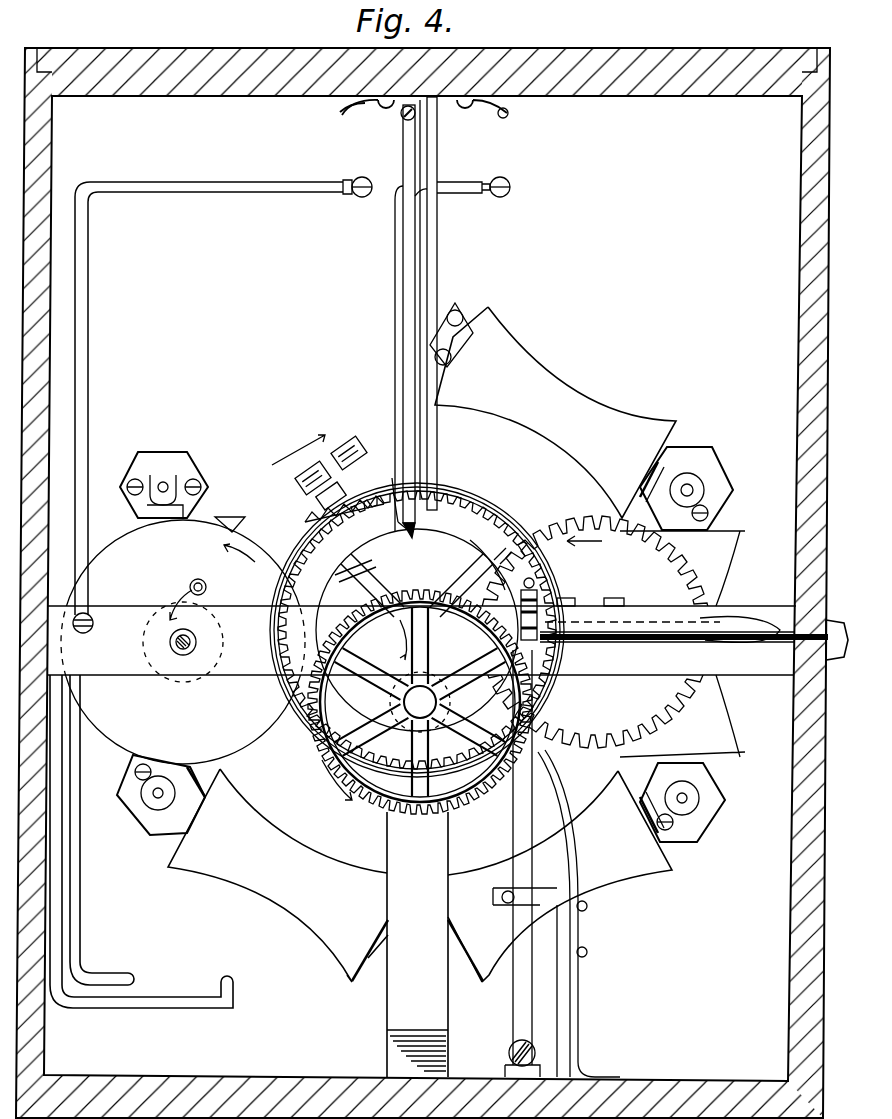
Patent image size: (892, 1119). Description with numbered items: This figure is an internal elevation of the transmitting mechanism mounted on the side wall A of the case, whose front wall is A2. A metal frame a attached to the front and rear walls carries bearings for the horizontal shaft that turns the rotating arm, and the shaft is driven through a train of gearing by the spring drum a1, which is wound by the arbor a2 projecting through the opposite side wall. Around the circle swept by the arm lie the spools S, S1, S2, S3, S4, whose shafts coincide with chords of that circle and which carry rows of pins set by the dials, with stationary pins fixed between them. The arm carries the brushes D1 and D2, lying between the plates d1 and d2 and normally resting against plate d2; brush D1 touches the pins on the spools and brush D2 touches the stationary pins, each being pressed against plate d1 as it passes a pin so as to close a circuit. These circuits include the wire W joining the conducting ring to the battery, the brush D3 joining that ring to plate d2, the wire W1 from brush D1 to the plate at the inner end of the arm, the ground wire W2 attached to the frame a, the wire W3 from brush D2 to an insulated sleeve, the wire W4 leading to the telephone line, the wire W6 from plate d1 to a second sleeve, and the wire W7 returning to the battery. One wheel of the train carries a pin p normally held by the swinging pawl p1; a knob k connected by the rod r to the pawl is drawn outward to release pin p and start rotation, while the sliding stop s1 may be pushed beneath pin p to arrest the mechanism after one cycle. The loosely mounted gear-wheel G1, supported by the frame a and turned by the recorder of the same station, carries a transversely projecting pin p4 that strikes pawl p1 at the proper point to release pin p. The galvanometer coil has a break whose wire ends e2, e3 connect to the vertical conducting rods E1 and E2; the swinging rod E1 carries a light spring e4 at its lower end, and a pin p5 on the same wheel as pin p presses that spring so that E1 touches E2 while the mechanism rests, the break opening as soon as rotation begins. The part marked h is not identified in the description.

The side wall A is at (423, 583).
The front wall A2 is at (798, 385).
The metal frame a is at (758, 662).
The drum a1 is at (208, 586).
The arbor a2 is at (198, 647).
The wire W is at (82, 953).
The wire W1 is at (355, 559).
The ground wire W2 is at (318, 182).
The wire W3 is at (417, 645).
The wire W4 is at (470, 196).
The wire W6 is at (378, 640).
The wire W7 is at (142, 1010).
The galvanometer wire end e2 is at (367, 119).
The galvanometer wire end e3 is at (482, 125).
The light spring e4 is at (462, 498).
The swinging conducting rod E1 is at (395, 284).
The stationary conducting rod E2 is at (432, 300).
The spool S is at (572, 397).
The spool S1 is at (733, 572).
The spool S2 is at (620, 876).
The spool S3 is at (245, 874).
The spool S4 is at (118, 762).
The sliding stop s1 is at (590, 593).
The brush D1 is at (298, 478).
The brush D2 is at (350, 445).
The brush D3 is at (272, 566).
The plate d1 is at (318, 492).
The plate d2 is at (312, 516).
The pin p is at (537, 532).
The swinging pawl p1 is at (645, 868).
The transversely projecting pin p4 is at (548, 690).
The pin p5 is at (392, 478).
The arm h is at (496, 512).
The gear-wheel G1 is at (470, 812).
The rod r is at (690, 642).
The knob k is at (824, 628).